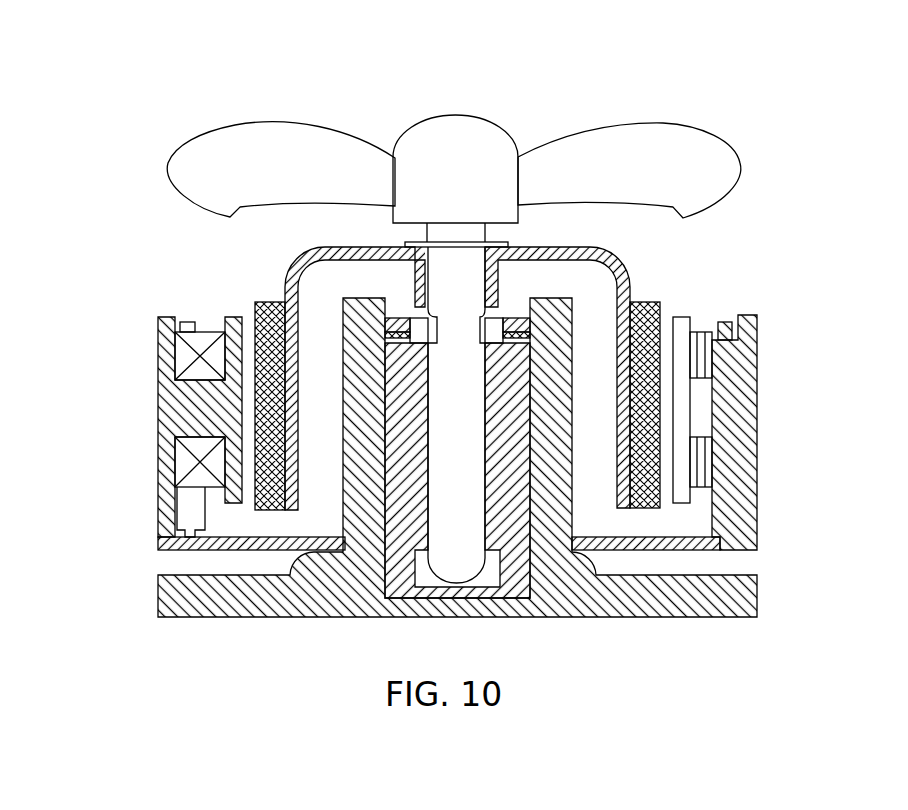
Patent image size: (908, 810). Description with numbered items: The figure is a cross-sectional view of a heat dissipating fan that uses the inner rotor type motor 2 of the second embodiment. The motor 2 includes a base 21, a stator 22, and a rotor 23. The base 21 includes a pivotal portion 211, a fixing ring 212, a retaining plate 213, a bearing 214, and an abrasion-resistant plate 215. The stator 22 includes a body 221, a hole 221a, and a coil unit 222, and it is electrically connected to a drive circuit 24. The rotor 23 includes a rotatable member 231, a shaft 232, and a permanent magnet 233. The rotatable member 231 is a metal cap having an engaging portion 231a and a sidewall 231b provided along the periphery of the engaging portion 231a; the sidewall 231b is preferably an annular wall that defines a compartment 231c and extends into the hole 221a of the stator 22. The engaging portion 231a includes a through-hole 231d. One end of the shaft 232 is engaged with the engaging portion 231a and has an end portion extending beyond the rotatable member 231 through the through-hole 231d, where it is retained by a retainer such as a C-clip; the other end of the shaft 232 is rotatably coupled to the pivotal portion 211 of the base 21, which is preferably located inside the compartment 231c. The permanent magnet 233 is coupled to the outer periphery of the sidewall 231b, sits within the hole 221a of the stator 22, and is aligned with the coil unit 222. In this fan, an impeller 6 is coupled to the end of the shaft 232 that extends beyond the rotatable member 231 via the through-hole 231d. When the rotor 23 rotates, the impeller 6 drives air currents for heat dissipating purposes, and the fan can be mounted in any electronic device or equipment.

The inner rotor type motor 2 is at (108, 234).
The impeller 6 is at (668, 132).
The base 21 is at (160, 588).
The pivotal portion 211 is at (360, 463).
The fixing ring 212 is at (523, 270).
The retaining plate 213 is at (512, 378).
The bearing 214 is at (633, 292).
The abrasion-resistant plate 215 is at (525, 570).
The stator 22 is at (766, 371).
The body 221 is at (748, 412).
The hole 221a is at (668, 326).
The coil unit 222 is at (712, 314).
The rotor 23 is at (632, 251).
The rotatable member 231 is at (370, 72).
The engaging portion 231a is at (357, 249).
The sidewall 231b is at (287, 297).
The compartment 231c is at (325, 290).
The through-hole 231d is at (443, 300).
The shaft 232 is at (460, 372).
The permanent magnet 233 is at (252, 301).
The drive circuit 24 is at (697, 552).